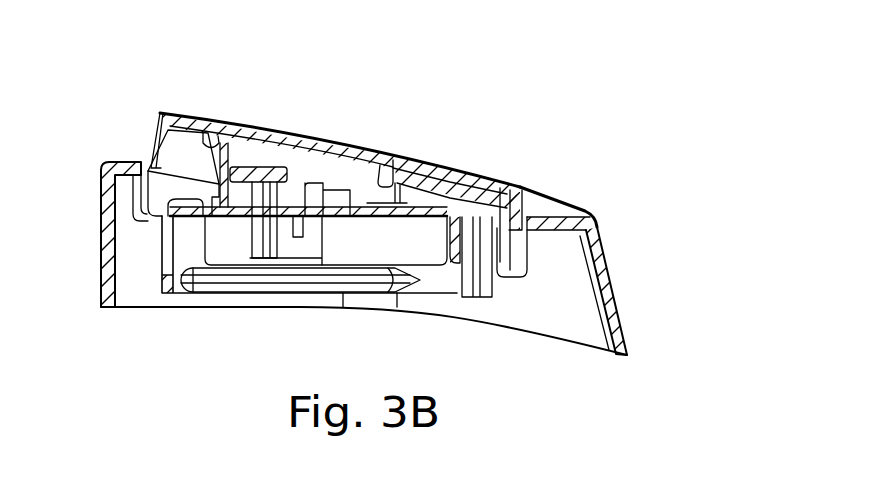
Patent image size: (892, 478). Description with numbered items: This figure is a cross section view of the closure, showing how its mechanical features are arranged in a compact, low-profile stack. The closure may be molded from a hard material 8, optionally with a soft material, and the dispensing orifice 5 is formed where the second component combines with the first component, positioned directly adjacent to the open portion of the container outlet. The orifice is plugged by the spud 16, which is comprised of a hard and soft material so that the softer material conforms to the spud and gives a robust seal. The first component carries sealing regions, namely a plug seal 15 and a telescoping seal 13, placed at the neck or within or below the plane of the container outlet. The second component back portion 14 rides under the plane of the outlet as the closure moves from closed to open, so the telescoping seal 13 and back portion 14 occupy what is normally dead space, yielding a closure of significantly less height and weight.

The dispensing orifice 5 is at (252, 150).
The hard material 8 is at (613, 281).
The telescoping seal 13 is at (210, 188).
The second component back portion 14 is at (527, 182).
The plug seal 15 is at (190, 233).
The spud 16 is at (292, 168).